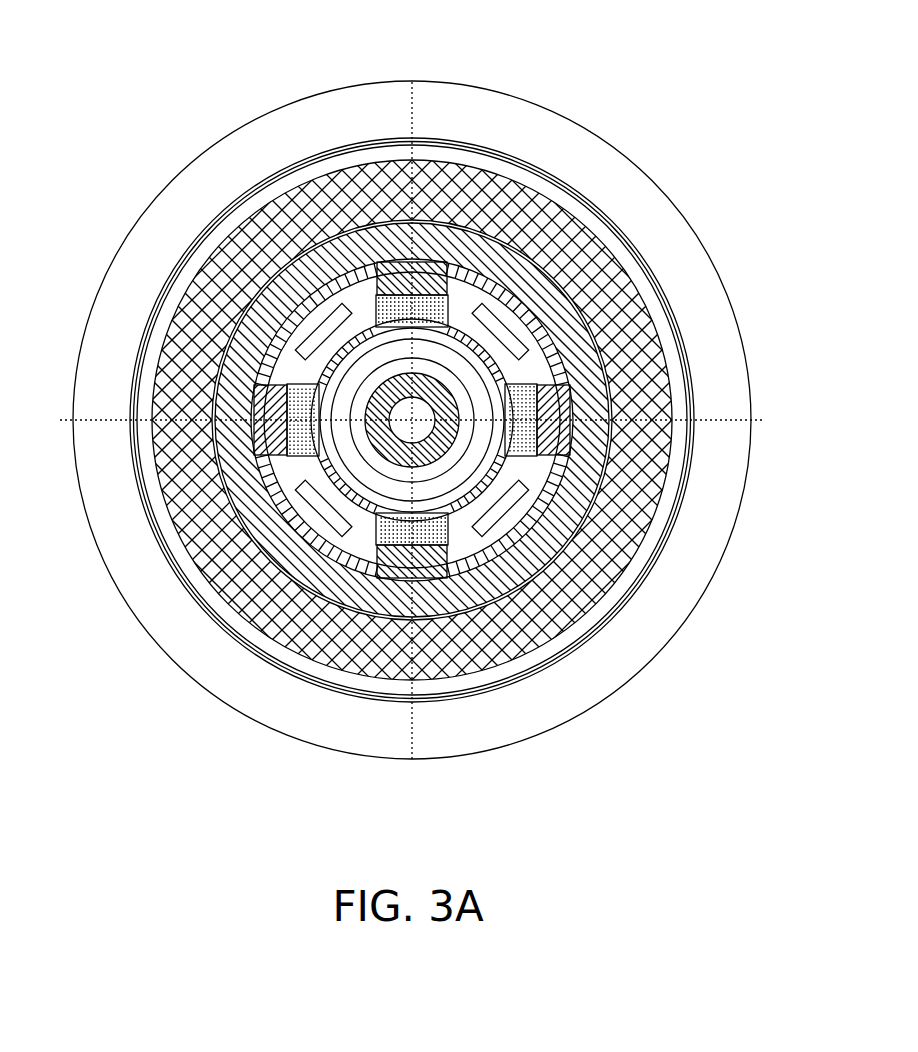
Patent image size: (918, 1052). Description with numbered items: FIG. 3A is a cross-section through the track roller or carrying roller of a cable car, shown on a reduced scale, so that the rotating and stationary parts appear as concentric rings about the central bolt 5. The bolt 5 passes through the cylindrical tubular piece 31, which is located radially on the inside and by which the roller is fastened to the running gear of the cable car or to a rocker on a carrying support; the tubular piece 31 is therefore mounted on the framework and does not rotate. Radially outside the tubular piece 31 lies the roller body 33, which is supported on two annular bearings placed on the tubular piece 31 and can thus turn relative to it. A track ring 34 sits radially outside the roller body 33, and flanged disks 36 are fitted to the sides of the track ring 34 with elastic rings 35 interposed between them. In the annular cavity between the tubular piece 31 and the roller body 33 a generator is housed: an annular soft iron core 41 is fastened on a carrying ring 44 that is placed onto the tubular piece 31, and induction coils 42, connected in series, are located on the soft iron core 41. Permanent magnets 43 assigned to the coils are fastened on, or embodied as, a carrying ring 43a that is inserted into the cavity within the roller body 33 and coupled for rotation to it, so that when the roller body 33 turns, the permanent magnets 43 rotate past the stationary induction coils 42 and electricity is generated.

The bolt 5 is at (430, 440).
The cylindrical tubular piece 31 is at (400, 393).
The roller body 33 is at (380, 262).
The track ring 34 is at (328, 183).
The elastic rings 35 is at (280, 170).
The flanged disks 36 is at (218, 170).
The annular soft iron core 41 is at (340, 350).
The induction coils 42 is at (434, 290).
The permanent magnets 43 is at (452, 287).
The carrying ring 43a is at (470, 305).
The carrying ring 44 is at (483, 400).